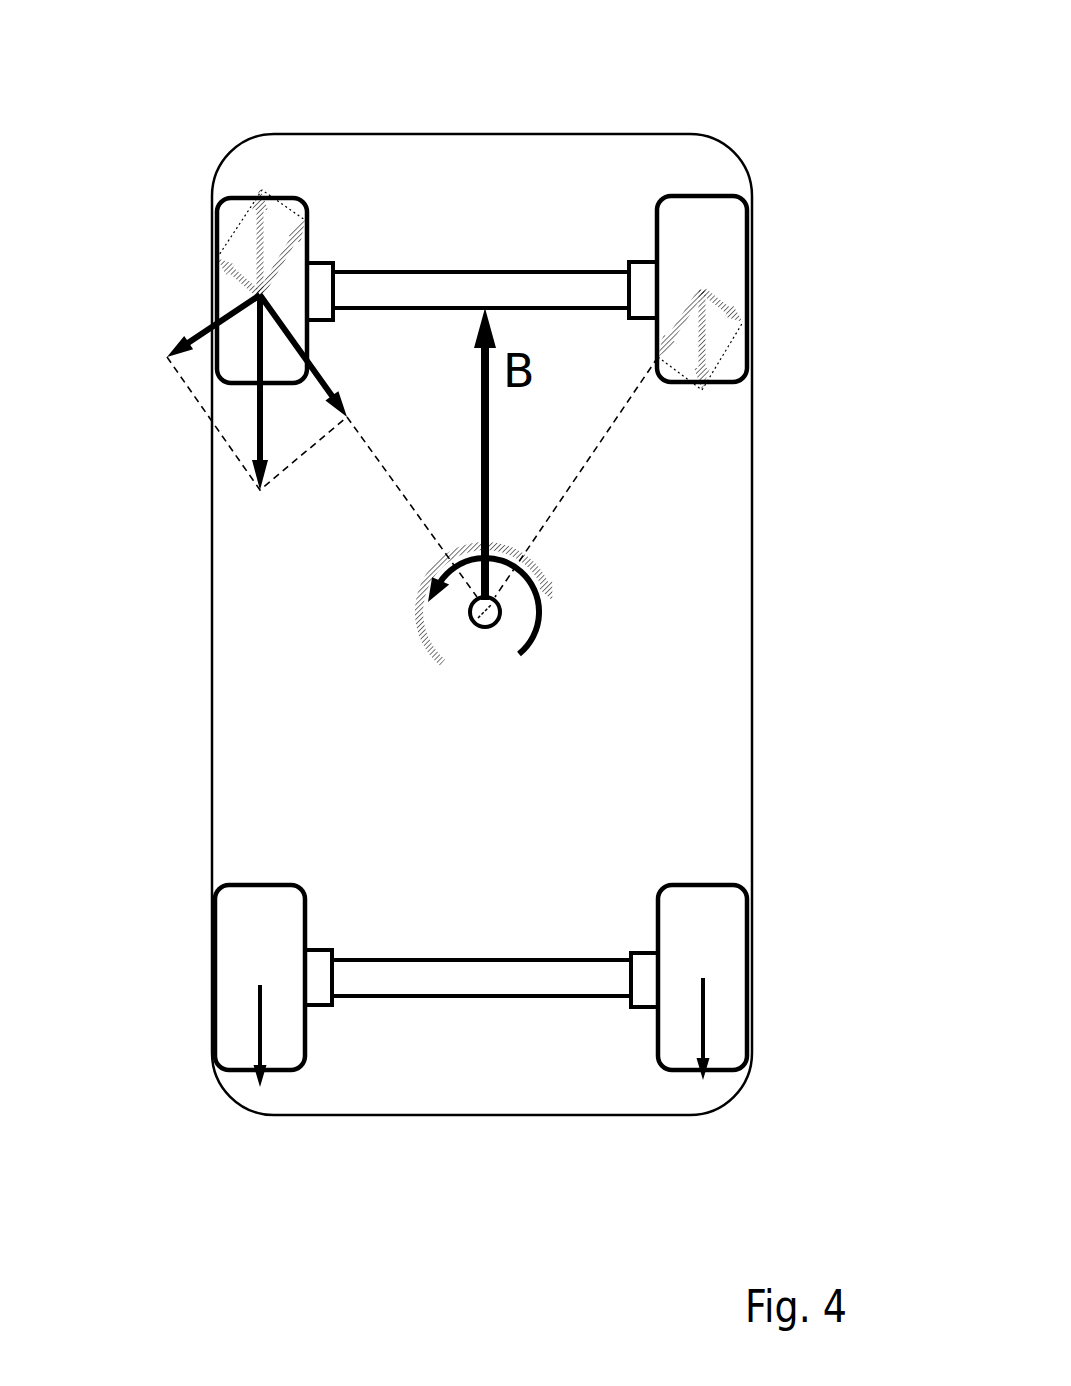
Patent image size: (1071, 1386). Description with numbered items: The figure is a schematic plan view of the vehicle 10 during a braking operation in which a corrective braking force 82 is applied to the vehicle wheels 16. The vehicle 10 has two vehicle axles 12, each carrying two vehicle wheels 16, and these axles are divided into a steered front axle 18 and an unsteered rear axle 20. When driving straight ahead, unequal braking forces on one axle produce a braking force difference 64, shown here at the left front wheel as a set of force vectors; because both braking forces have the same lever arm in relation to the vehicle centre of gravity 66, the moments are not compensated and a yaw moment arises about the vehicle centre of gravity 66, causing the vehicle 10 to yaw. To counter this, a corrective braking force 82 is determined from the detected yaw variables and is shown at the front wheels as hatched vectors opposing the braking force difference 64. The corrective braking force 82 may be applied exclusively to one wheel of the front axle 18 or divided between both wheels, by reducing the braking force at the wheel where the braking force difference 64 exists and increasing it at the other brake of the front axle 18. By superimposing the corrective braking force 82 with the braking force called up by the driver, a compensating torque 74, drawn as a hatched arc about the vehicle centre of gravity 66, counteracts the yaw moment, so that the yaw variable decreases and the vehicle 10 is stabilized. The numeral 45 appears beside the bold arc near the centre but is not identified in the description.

The vehicle 10 is at (205, 107).
The vehicle axles 12 is at (488, 635).
The vehicle wheels 16 is at (233, 215).
The front axle 18 is at (488, 290).
The rear axle 20 is at (512, 980).
The yaw moment 45 is at (540, 627).
The braking force difference 64 is at (260, 455).
The vehicle centre of gravity 66 is at (477, 615).
The compensating torque 74 is at (543, 582).
The corrective braking force 82 is at (262, 235).